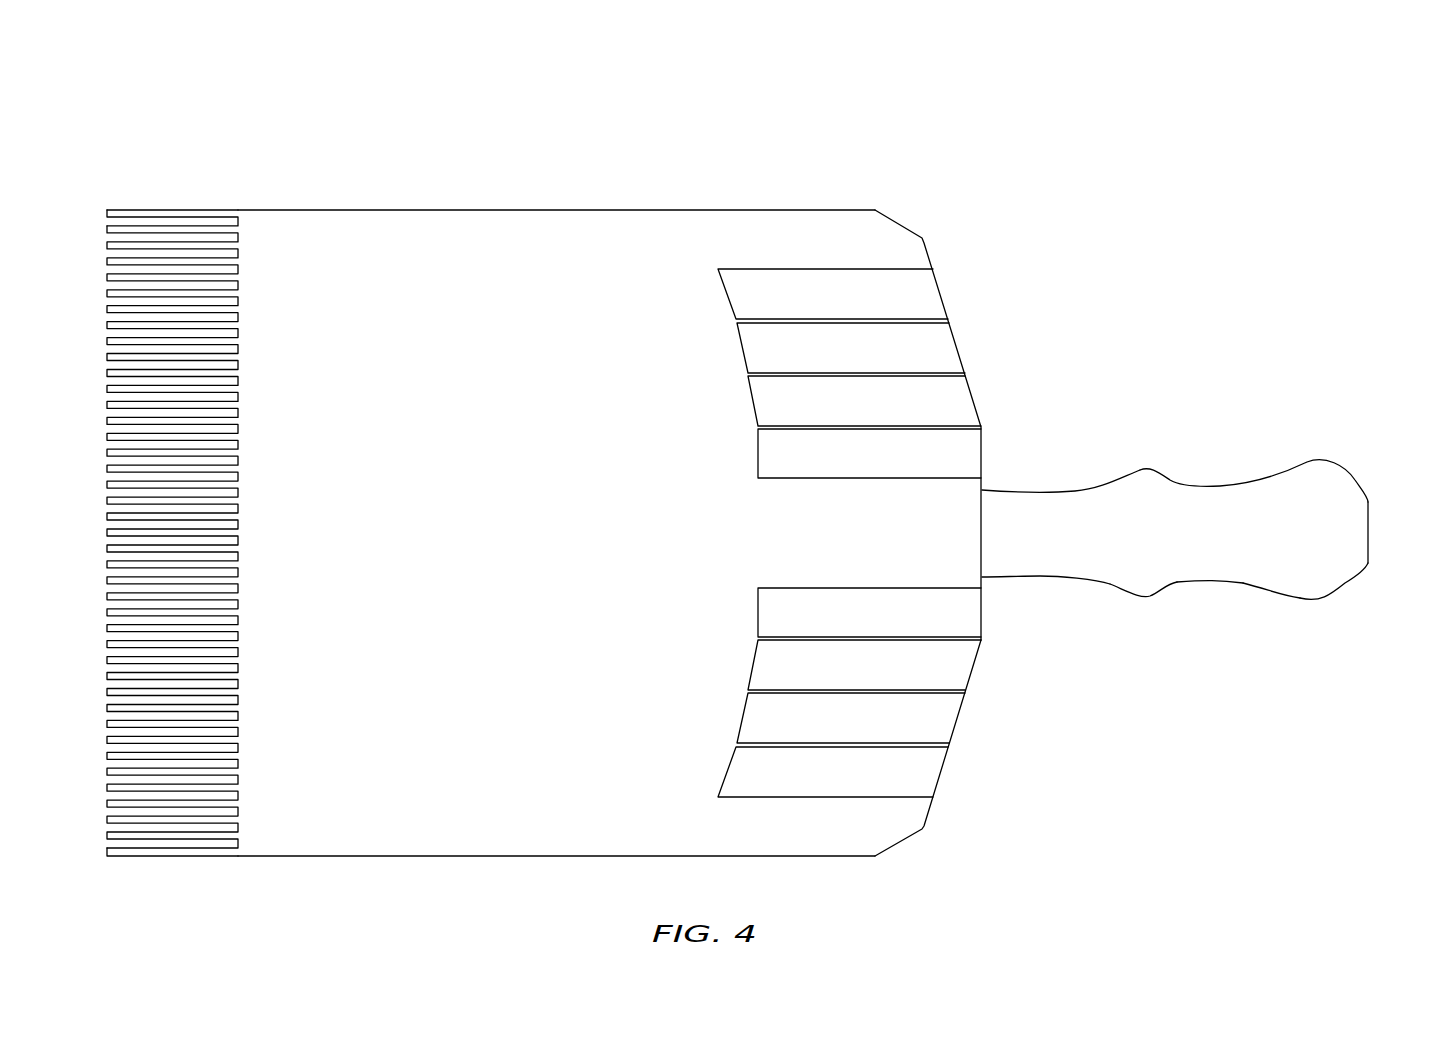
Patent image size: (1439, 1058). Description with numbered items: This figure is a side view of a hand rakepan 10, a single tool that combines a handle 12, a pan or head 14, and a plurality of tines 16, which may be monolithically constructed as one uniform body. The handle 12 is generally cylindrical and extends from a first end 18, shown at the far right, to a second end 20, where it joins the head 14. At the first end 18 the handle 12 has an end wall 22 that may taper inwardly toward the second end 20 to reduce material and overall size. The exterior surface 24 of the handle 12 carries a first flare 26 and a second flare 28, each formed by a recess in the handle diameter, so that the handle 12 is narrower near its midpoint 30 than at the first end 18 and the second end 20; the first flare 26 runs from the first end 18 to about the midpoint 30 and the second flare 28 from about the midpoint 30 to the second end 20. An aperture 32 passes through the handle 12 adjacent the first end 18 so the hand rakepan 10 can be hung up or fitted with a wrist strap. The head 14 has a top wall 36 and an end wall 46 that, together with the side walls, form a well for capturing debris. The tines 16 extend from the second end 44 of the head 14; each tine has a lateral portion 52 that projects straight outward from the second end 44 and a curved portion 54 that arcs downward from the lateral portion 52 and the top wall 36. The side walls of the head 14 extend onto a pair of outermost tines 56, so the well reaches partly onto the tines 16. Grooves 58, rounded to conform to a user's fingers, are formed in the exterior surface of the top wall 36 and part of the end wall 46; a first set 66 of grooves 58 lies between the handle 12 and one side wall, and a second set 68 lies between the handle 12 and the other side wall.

The hand rakepan 10 is at (588, 490).
The handle 12 is at (1207, 499).
The head 14 is at (624, 460).
The plurality of tines 16 is at (183, 490).
The first end 18 is at (1368, 502).
The second end 20 is at (982, 490).
The end wall 22 is at (1368, 517).
The exterior surface 24 is at (1247, 540).
The first flare 26 is at (1203, 582).
The second flare 28 is at (1047, 577).
The midpoint 30 is at (1150, 597).
The aperture 32 is at (1325, 533).
The top wall 36 is at (617, 283).
The second end 44 is at (238, 848).
The end wall 46 is at (933, 795).
The lateral portion 52 is at (215, 210).
The curved portion 54 is at (128, 210).
The outermost tines 56 is at (158, 210).
The grooves 58 is at (930, 297).
The first set 66 is at (1075, 750).
The second set 68 is at (1112, 296).